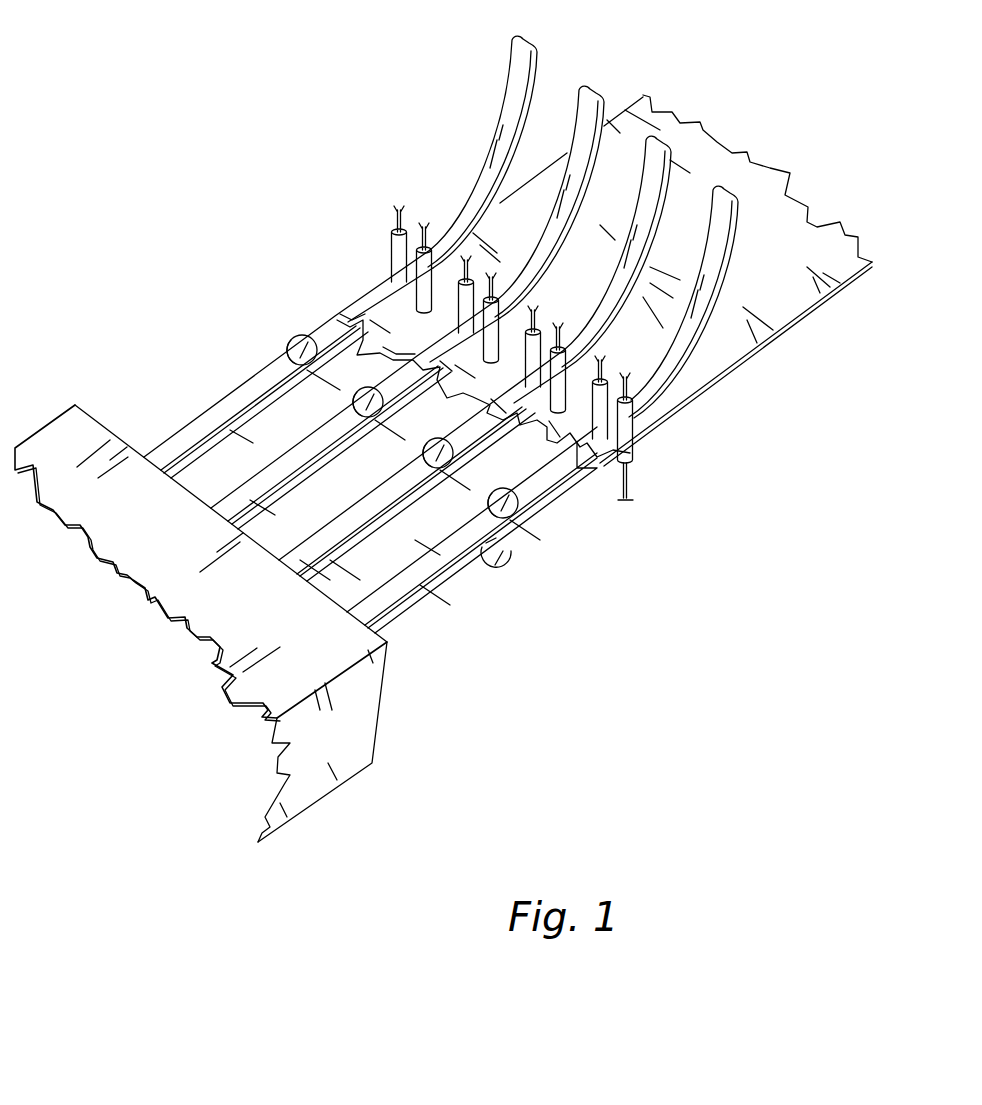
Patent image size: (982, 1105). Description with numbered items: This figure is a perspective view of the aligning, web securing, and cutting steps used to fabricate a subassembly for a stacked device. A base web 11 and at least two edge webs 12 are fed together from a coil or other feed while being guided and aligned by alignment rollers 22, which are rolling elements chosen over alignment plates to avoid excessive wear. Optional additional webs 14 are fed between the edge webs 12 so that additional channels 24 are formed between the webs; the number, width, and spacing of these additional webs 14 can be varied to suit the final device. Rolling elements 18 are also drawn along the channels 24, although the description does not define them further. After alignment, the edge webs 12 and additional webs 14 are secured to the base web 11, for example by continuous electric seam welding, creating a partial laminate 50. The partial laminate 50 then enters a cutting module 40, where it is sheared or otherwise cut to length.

The base web 11 is at (807, 310).
The edge webs 12 is at (492, 165).
The additional webs 14 is at (593, 92).
The ball 18 is at (520, 512).
The alignment rollers 22 is at (636, 460).
The channels 24 is at (192, 440).
The cutting module 40 is at (352, 770).
The partial laminate 50 is at (192, 400).